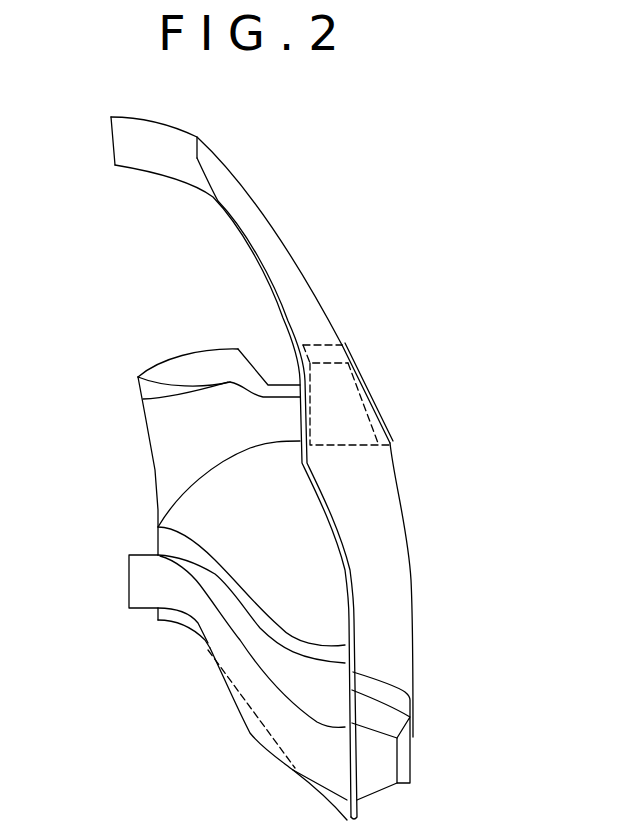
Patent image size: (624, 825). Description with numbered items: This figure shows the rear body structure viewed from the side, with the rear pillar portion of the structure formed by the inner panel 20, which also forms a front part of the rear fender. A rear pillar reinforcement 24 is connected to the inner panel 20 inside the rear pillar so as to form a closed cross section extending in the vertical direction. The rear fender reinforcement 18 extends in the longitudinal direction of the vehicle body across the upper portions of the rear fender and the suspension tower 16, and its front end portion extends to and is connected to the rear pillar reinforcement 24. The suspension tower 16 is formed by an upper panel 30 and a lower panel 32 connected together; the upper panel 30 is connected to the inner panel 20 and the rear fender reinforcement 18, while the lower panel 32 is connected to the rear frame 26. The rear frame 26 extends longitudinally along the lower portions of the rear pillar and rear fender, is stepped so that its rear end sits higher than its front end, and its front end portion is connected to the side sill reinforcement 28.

The suspension tower 16 is at (122, 386).
The rear fender reinforcement 18 is at (377, 407).
The inner panel 20 is at (243, 248).
The rear pillar reinforcement 24 is at (303, 295).
The rear frame 26 is at (123, 584).
The side sill reinforcement 28 is at (408, 767).
The upper panel 30 is at (177, 365).
The lower panel 32 is at (150, 438).